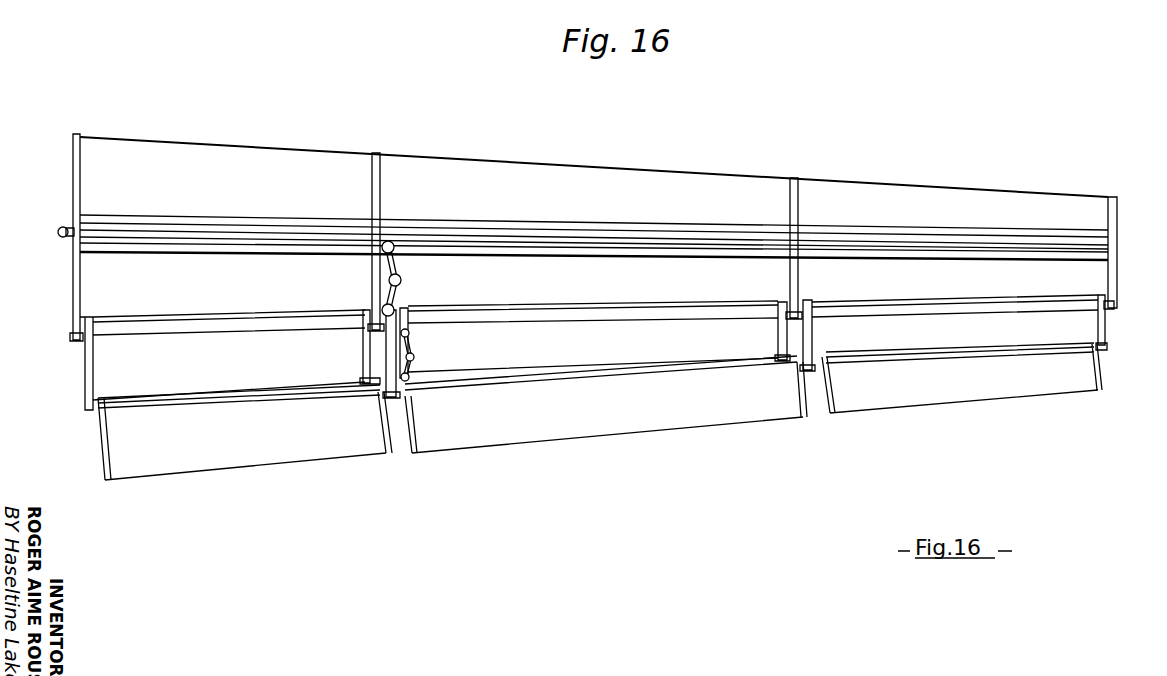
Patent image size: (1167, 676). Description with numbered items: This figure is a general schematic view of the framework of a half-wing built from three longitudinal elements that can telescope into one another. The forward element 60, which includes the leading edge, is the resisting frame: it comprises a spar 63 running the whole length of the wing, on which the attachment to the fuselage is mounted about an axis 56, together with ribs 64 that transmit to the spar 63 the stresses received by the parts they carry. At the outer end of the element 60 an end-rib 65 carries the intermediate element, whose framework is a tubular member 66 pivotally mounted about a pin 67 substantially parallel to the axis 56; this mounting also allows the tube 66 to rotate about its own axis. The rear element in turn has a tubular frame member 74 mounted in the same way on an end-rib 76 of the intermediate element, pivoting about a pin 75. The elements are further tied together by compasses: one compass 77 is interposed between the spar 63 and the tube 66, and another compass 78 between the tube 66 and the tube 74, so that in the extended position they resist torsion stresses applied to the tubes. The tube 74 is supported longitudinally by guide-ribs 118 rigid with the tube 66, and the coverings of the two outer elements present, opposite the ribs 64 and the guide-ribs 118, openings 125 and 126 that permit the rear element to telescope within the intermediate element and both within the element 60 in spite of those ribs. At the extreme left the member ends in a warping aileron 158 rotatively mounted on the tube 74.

The axis 56 is at (62, 226).
The longitudinal element 60 is at (632, 192).
The spar 63 is at (143, 230).
The ribs 64 is at (381, 177).
The end-rib 65 is at (1117, 214).
The tubular member 66 is at (263, 327).
The pin 67 is at (1112, 298).
The tubular frame member 74 is at (503, 388).
The pin 75 is at (1103, 350).
The end-rib 76 is at (1102, 317).
The compass 77 is at (395, 300).
The compass 78 is at (412, 338).
The guide-ribs 118 is at (388, 362).
The openings 125 is at (368, 368).
The openings 126 is at (393, 449).
The warping aileron 158 is at (992, 386).